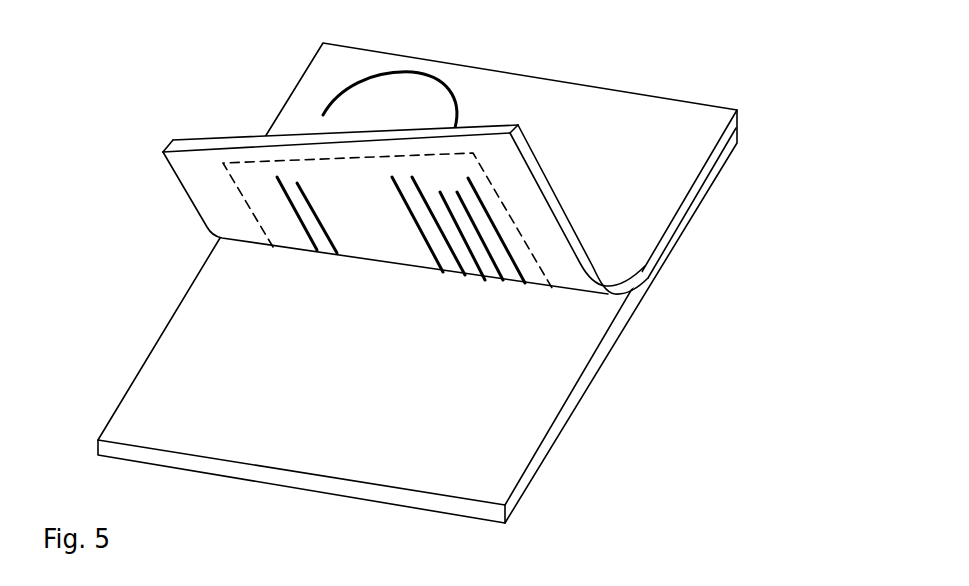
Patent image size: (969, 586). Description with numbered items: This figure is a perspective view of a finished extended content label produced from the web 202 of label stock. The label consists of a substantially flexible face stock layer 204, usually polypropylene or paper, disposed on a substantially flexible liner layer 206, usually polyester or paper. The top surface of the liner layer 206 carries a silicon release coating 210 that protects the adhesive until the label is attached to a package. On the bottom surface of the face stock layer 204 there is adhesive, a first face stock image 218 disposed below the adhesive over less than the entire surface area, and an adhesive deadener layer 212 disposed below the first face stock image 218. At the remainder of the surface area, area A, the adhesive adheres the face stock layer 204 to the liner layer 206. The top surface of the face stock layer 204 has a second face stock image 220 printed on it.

The web of label stock 202 is at (168, 91).
The face stock layer 204 is at (713, 143).
The liner layer 206 is at (593, 370).
The silicon release coating 210 is at (178, 358).
The adhesive deadener layer 212 is at (362, 215).
The first face stock image 218 is at (455, 246).
The second face stock image 220 is at (672, 118).
The area A is at (223, 218).